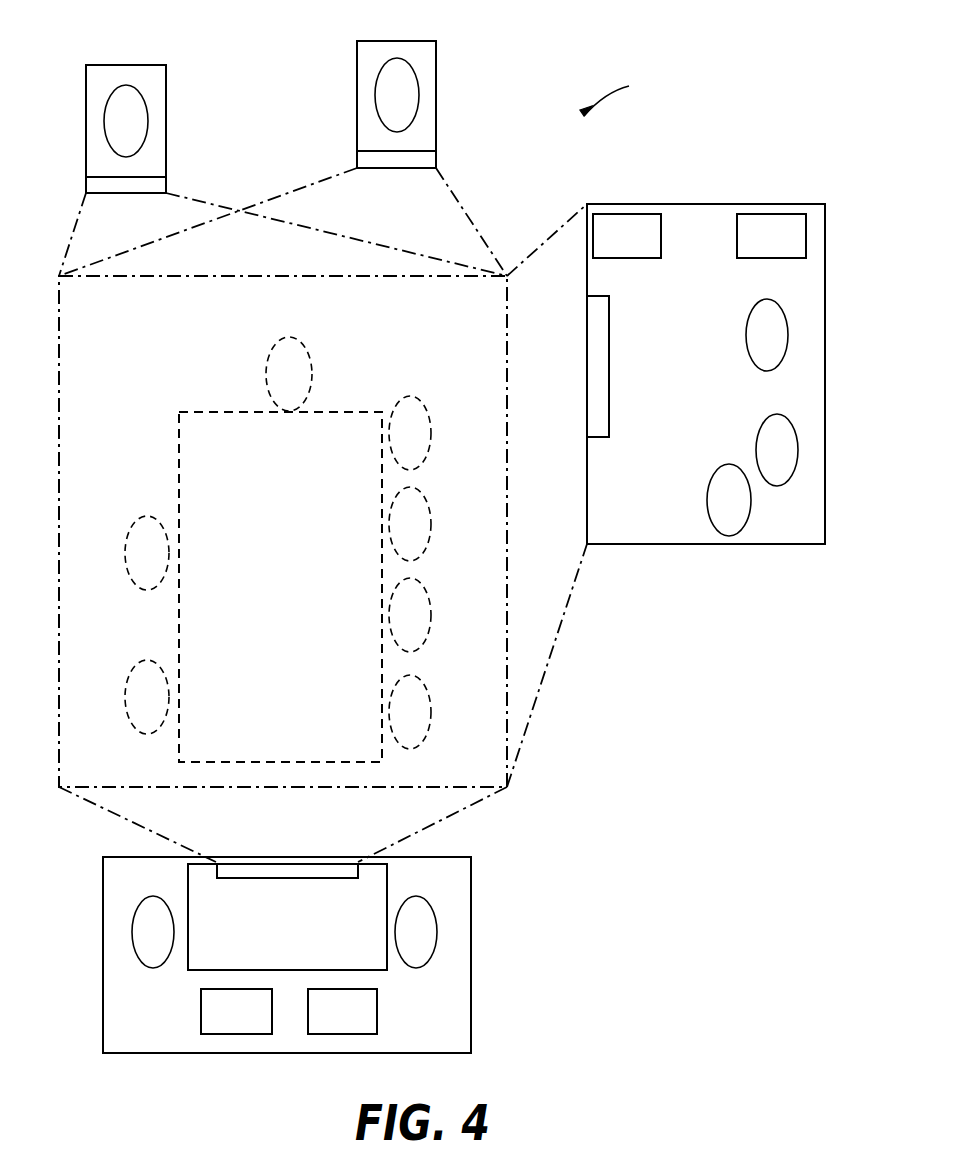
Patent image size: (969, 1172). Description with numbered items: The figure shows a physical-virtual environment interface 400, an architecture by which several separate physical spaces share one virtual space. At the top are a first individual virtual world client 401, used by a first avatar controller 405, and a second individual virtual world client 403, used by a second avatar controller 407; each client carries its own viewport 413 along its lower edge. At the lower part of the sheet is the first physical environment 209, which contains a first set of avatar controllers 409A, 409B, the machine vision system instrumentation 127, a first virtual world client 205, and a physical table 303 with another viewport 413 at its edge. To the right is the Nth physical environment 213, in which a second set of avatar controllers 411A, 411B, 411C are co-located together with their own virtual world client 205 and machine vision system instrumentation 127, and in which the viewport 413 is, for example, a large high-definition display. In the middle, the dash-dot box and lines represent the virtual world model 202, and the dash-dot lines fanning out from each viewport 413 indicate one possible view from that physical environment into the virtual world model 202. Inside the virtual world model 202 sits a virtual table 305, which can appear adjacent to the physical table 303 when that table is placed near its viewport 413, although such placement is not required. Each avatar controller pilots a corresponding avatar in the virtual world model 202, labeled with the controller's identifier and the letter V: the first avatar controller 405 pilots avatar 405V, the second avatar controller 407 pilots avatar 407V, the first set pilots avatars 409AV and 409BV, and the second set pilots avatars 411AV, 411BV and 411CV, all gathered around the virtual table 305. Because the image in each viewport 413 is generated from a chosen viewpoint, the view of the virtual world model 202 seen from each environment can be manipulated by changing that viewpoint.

The physical-virtual environment interface 400 is at (625, 94).
The first individual virtual world client 401 is at (142, 65).
The second individual virtual world client 403 is at (413, 41).
The first avatar controller 405 is at (148, 117).
The second avatar controller 407 is at (418, 95).
The viewport 413 is at (166, 185).
The virtual world model 202 is at (283, 531).
The virtual table 305 is at (280, 587).
The avatar of first avatar controller 405V is at (309, 362).
The avatar of avatar controller 411A 411AV is at (424, 400).
The avatar of second avatar controller 407V is at (424, 490).
The avatar of avatar controller 411C 411CV is at (424, 590).
The avatar of avatar controller 409B 409BV is at (424, 680).
The avatar of avatar controller 411B 411BV is at (146, 518).
The avatar of avatar controller 409A 409AV is at (146, 661).
The Nth physical environment 213 is at (706, 374).
The first virtual world client 205 is at (431, 624).
The machine vision system instrumentation 127 is at (557, 624).
The avatar controller of second set 411A is at (746, 326).
The avatar controller of second set 411B is at (758, 424).
The avatar controller of second set 411C is at (710, 486).
The first physical environment 209 is at (287, 955).
The physical table 303 is at (287, 917).
The avatar controller of first set 409A is at (165, 897).
The avatar controller of first set 409B is at (404, 897).